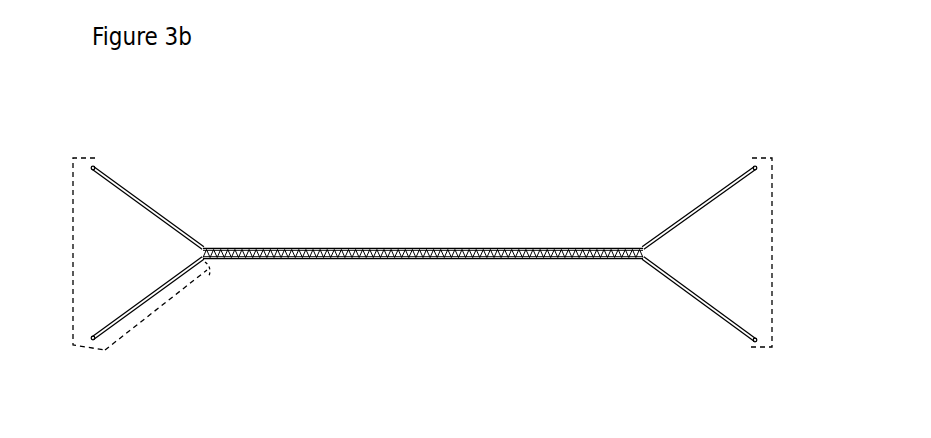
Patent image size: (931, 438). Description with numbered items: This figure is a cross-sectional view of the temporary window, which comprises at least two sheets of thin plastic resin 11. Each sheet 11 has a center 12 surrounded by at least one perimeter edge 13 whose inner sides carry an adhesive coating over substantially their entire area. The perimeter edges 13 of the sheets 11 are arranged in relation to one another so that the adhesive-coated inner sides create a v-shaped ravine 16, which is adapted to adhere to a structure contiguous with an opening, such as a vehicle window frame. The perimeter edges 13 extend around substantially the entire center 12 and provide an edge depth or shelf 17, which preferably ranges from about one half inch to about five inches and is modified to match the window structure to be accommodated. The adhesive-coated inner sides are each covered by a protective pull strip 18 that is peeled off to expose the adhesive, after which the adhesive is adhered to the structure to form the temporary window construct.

The sheet of thin plastic resin 11 is at (317, 246).
The center 12 is at (488, 249).
The perimeter edge 13 is at (134, 193).
The v-shaped ravine 16 is at (73, 253).
The edge depth/shelf 17 is at (160, 316).
The protective pull strip 18 is at (160, 220).